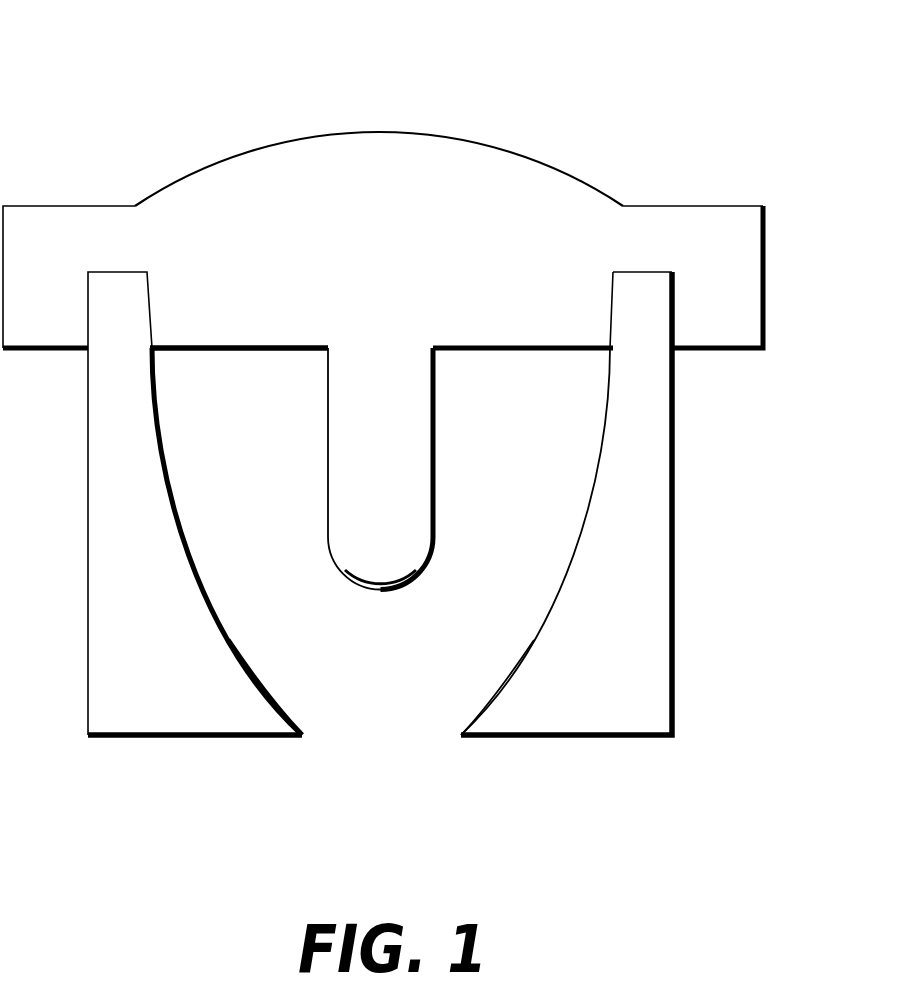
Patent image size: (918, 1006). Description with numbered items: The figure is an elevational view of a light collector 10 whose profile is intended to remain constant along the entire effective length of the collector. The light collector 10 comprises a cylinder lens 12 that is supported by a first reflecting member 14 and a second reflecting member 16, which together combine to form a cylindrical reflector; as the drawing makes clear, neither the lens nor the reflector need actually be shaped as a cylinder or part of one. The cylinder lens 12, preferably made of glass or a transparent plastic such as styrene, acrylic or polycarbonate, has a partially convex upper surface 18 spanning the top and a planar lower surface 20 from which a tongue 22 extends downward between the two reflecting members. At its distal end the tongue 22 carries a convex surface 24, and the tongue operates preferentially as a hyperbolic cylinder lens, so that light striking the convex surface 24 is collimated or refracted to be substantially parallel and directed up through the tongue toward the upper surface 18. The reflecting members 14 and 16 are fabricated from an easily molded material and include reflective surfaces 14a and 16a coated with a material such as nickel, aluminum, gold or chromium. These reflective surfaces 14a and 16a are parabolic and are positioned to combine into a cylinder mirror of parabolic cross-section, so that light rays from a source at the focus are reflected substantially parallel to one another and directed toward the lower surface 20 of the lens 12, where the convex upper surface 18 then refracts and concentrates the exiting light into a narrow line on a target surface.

The light collector 10 is at (228, 74).
The cylinder lens 12 is at (750, 262).
The first reflecting member 14 is at (100, 560).
The reflective surface 14a is at (270, 693).
The second reflecting member 16 is at (663, 558).
The reflective surface 16a is at (495, 697).
The upper surface 18 is at (560, 168).
The lower surface 20 is at (209, 352).
The tongue 22 is at (437, 465).
The convex surface 24 is at (388, 594).